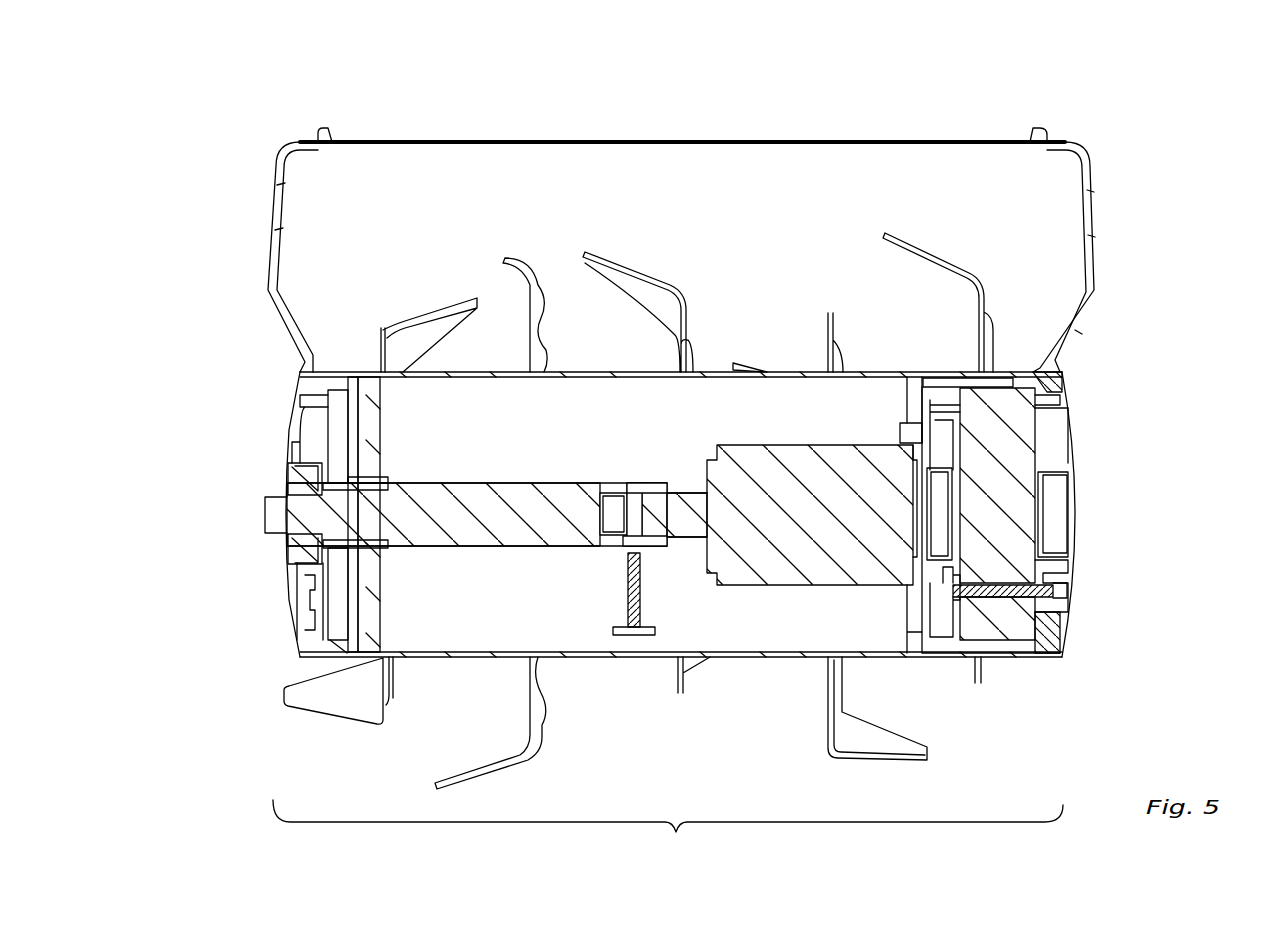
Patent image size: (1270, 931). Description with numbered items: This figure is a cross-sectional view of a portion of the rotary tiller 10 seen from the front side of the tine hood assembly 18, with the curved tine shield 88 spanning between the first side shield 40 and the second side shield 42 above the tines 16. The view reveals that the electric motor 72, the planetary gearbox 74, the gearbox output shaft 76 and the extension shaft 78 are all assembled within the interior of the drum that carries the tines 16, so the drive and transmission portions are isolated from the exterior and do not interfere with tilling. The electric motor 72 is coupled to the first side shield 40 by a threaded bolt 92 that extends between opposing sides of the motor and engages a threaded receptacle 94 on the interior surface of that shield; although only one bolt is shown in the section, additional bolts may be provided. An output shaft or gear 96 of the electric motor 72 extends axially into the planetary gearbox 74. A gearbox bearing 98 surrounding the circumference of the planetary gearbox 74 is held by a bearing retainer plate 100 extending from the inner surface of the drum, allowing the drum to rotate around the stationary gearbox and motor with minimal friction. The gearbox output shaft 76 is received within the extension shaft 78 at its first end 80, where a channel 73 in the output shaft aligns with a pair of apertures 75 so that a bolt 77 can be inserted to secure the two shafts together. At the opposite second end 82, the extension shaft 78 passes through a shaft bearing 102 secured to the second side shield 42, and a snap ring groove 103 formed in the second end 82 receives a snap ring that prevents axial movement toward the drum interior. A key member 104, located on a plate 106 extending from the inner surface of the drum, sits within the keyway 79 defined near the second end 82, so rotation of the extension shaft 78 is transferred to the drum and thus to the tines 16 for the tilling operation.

The rotary tiller 10 is at (178, 88).
The tines 16 is at (668, 832).
The tine hood assembly 18 is at (682, 132).
The first side shield 40 is at (1066, 386).
The second side shield 42 is at (290, 435).
The electric motor 72 is at (1000, 625).
The channel 73 is at (628, 513).
The planetary gearbox 74 is at (788, 580).
The apertures 75 is at (633, 483).
The gearbox output shaft 76 is at (690, 490).
The bolt 77 is at (630, 600).
The extension shaft 78 is at (506, 480).
The keyway 79 is at (390, 490).
The first end 80 is at (658, 480).
The second end 82 is at (265, 513).
The tine shield 88 is at (688, 213).
The threaded bolt 92 is at (912, 620).
The threaded receptacle 94 is at (1055, 588).
The output shaft or gear 96 is at (917, 517).
The gearbox bearing 98 is at (900, 433).
The bearing retainer plate 100 is at (907, 393).
The shaft bearing 102 is at (302, 550).
The snap ring groove 103 is at (290, 480).
The key member 104 is at (355, 470).
The plate 106 is at (375, 400).